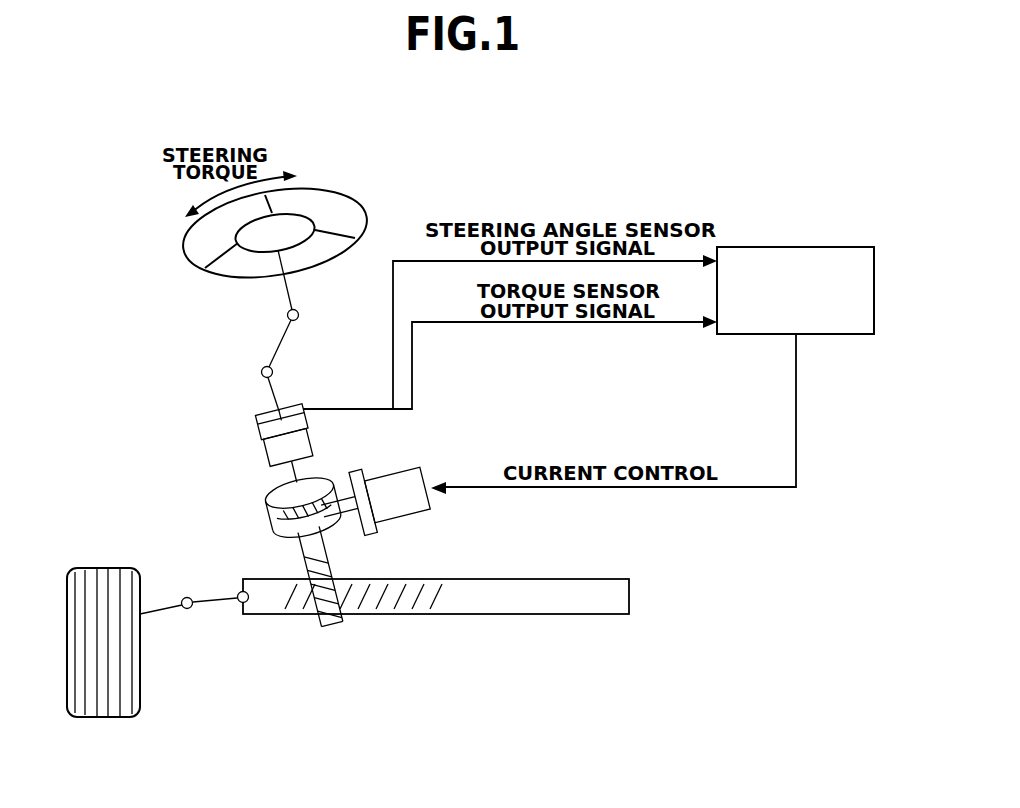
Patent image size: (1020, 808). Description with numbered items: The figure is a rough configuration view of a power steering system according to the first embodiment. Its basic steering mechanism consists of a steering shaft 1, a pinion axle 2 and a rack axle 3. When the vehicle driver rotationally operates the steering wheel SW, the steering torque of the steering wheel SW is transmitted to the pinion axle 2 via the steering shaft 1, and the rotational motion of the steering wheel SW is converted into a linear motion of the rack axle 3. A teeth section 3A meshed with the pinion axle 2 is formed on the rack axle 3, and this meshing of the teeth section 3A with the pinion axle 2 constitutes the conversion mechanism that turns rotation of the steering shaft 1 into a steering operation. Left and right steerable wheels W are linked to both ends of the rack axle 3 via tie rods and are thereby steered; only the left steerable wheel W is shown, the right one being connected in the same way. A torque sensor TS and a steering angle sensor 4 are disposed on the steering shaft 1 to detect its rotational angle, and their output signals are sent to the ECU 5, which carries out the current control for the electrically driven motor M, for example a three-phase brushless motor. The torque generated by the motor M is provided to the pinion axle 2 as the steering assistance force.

The steering wheel SW is at (345, 192).
The steering shaft 1 is at (266, 392).
The steering angle sensor 4 is at (250, 421).
The torque sensor TS is at (248, 465).
The pinion axle 2 is at (312, 551).
The electrically driven motor M is at (423, 472).
The rack axle 3 is at (507, 614).
The teeth section 3A is at (417, 583).
The steerable wheel W is at (104, 574).
The ECU 5 is at (815, 254).